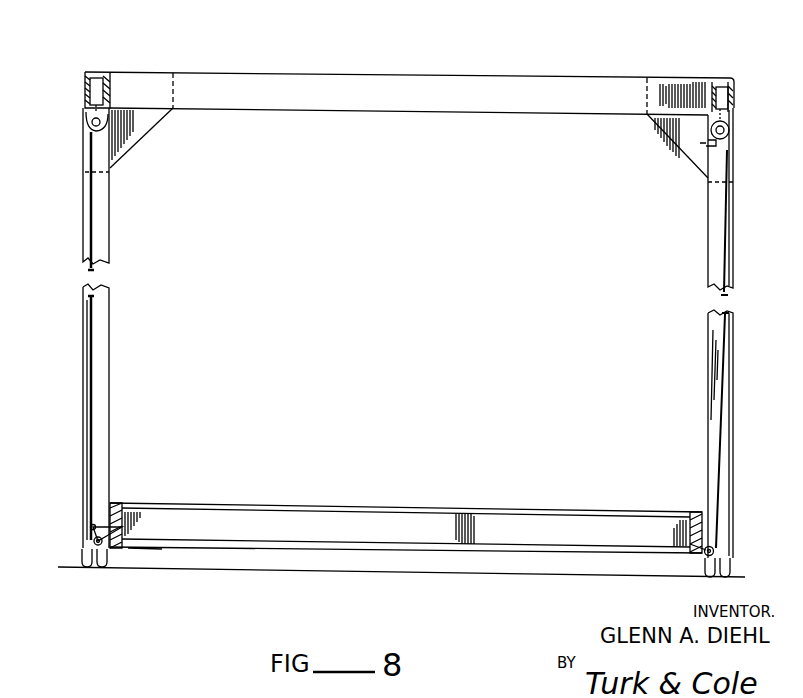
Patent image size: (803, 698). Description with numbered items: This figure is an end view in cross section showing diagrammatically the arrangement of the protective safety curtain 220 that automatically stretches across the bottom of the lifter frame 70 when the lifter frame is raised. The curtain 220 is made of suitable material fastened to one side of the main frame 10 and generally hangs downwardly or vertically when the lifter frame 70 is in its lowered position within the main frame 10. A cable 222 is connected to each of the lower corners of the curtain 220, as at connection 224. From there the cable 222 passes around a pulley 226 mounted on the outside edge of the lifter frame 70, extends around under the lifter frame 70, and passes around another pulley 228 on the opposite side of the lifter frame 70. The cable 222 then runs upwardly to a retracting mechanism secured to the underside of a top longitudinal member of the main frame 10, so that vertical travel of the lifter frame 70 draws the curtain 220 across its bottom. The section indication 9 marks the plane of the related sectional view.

The main frame 10 is at (452, 72).
The section line 9- 9 is at (755, 82).
The lifter frame 70 is at (362, 503).
The safety curtain 220 is at (93, 356).
The cable 222 is at (722, 368).
The curtain corner connection 224 is at (91, 528).
The pulley 226 is at (80, 556).
The pulley 228 is at (714, 551).